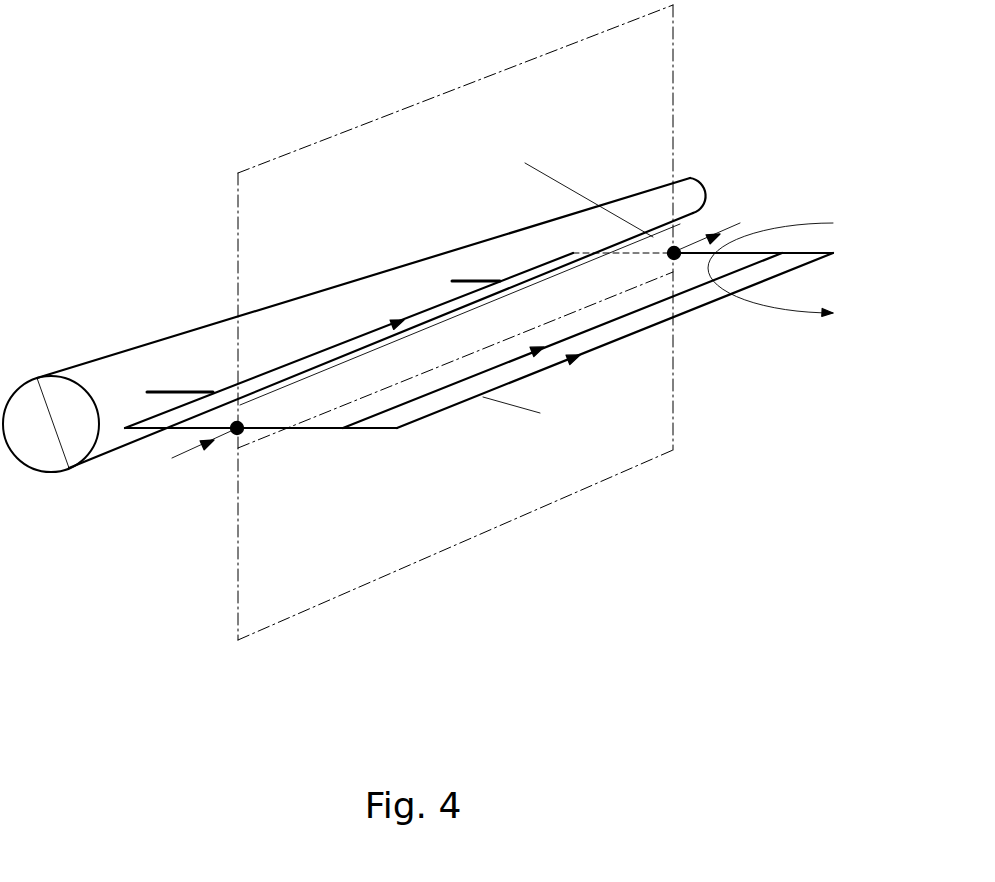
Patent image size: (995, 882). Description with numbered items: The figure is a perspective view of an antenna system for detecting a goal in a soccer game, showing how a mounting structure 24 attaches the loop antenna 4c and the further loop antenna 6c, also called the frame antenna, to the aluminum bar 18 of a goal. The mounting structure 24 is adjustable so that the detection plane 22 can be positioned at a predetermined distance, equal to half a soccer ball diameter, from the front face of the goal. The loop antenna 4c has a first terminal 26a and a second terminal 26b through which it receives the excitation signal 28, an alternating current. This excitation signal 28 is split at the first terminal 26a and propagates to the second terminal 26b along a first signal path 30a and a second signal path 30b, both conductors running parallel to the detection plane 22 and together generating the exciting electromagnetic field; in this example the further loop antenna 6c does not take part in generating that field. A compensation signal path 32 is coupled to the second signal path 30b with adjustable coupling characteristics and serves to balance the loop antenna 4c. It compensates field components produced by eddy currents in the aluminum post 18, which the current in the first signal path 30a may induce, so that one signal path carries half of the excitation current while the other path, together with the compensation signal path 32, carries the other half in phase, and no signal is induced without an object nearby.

The loop antenna 4c is at (724, 319).
The further loop antenna 6c is at (573, 253).
The aluminum bar 18 is at (688, 188).
The detection plane 22 is at (317, 430).
The mounting structure 24 is at (147, 390).
The first terminal 26a is at (233, 433).
The second terminal 26b is at (680, 245).
The excitation signal 28 is at (148, 485).
The first signal path 30a is at (302, 350).
The second signal path 30b is at (428, 397).
The compensation signal path 32 is at (672, 323).